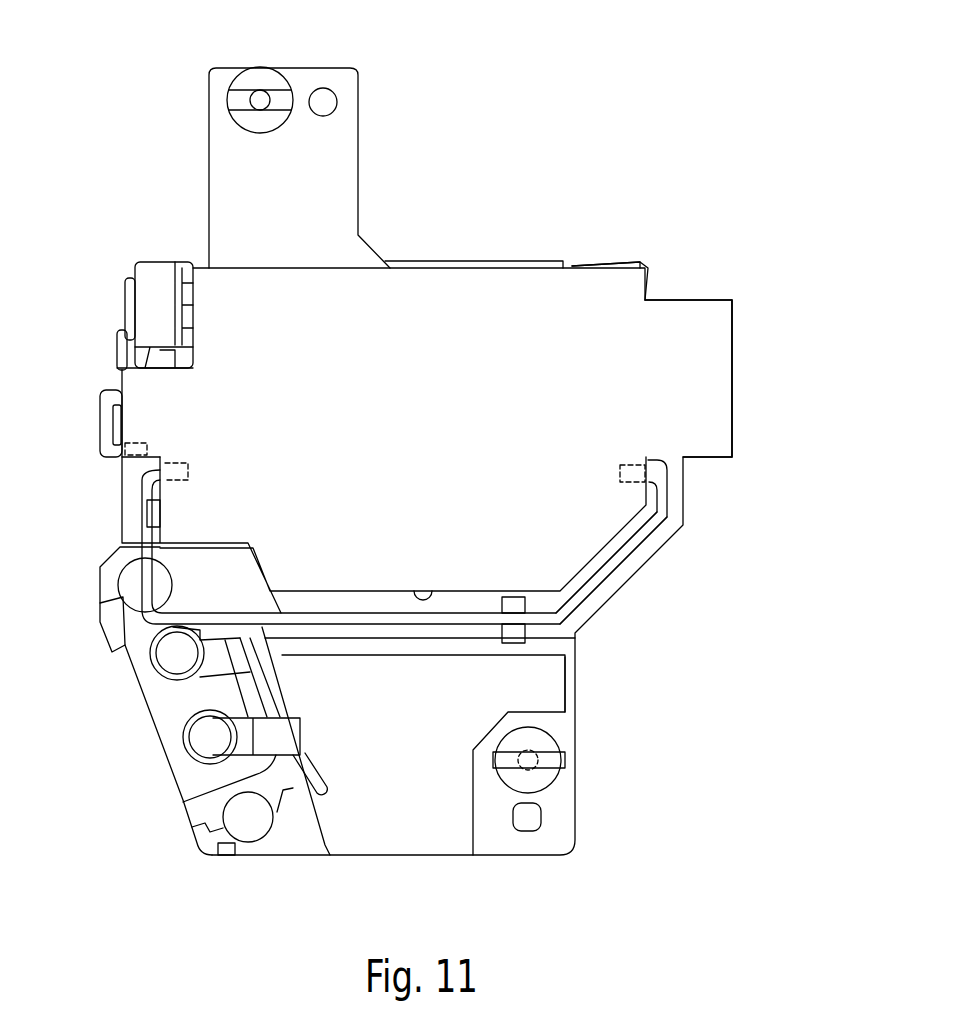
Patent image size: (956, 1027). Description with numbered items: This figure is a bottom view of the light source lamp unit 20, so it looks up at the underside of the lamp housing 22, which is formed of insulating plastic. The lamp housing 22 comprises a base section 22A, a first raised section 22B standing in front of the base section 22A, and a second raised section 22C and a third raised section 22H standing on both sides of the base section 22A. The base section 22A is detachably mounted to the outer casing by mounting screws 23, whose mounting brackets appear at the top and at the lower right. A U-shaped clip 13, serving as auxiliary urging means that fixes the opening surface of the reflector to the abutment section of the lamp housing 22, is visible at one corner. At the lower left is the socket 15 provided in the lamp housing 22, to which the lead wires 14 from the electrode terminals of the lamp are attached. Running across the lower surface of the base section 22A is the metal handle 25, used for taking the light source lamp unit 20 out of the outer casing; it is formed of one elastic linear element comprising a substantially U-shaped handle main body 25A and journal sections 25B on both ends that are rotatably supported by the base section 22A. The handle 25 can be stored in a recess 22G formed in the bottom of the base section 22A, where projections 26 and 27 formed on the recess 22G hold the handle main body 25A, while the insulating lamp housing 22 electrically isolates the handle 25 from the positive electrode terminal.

The light source lamp unit 20 is at (640, 78).
The lamp housing 22 is at (728, 277).
The base section 22A is at (687, 415).
The first raised section 22B is at (628, 265).
The second raised section 22C is at (732, 333).
The recess 22G is at (432, 588).
The third raised section 22H is at (125, 320).
The U-shaped clip 13 is at (145, 302).
The mounting screw 23 is at (265, 80).
The handle 25 is at (597, 608).
The handle main body 25A is at (622, 565).
The journal section 25B is at (183, 470).
The projection 26 is at (160, 512).
The projection 27 is at (517, 643).
The socket 15 is at (165, 710).
The lead wire 14 is at (225, 640).